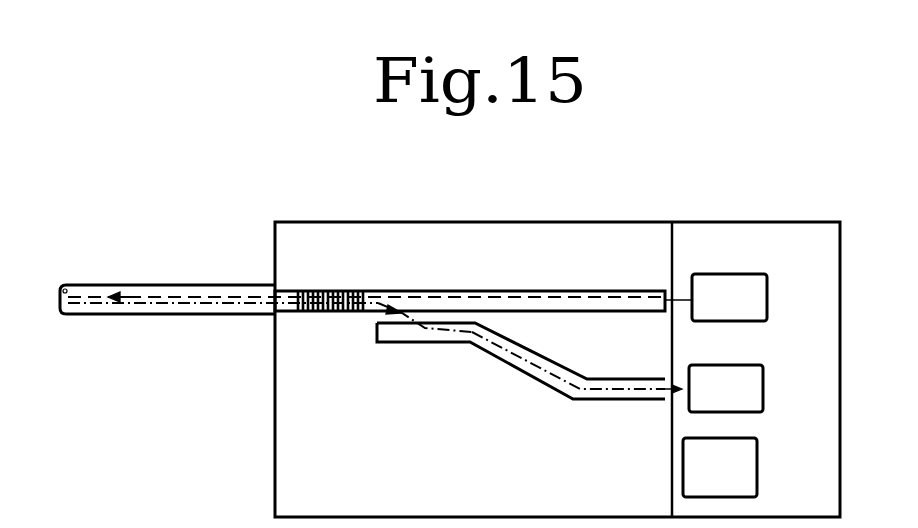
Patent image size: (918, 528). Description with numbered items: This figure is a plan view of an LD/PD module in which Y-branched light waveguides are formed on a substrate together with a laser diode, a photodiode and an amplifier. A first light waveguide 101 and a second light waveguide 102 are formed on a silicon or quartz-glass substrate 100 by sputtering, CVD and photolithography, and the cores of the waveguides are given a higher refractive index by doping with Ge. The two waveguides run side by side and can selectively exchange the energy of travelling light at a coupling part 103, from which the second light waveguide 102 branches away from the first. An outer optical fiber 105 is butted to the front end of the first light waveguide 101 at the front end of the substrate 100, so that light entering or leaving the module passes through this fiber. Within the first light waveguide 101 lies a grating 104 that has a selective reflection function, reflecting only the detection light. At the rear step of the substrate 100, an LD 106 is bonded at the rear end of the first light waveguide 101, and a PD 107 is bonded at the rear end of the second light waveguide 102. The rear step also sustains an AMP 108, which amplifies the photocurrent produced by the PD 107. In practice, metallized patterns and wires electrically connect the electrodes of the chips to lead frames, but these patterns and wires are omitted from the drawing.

The substrate 100 is at (503, 463).
The first light waveguide 101 is at (616, 300).
The second light waveguide 102 is at (535, 365).
The coupling part 103 is at (404, 318).
The grating 104 is at (315, 314).
The outer optical fiber 105 is at (162, 311).
The LD 106 is at (752, 304).
The PD 107 is at (752, 398).
The AMP 108 is at (748, 466).